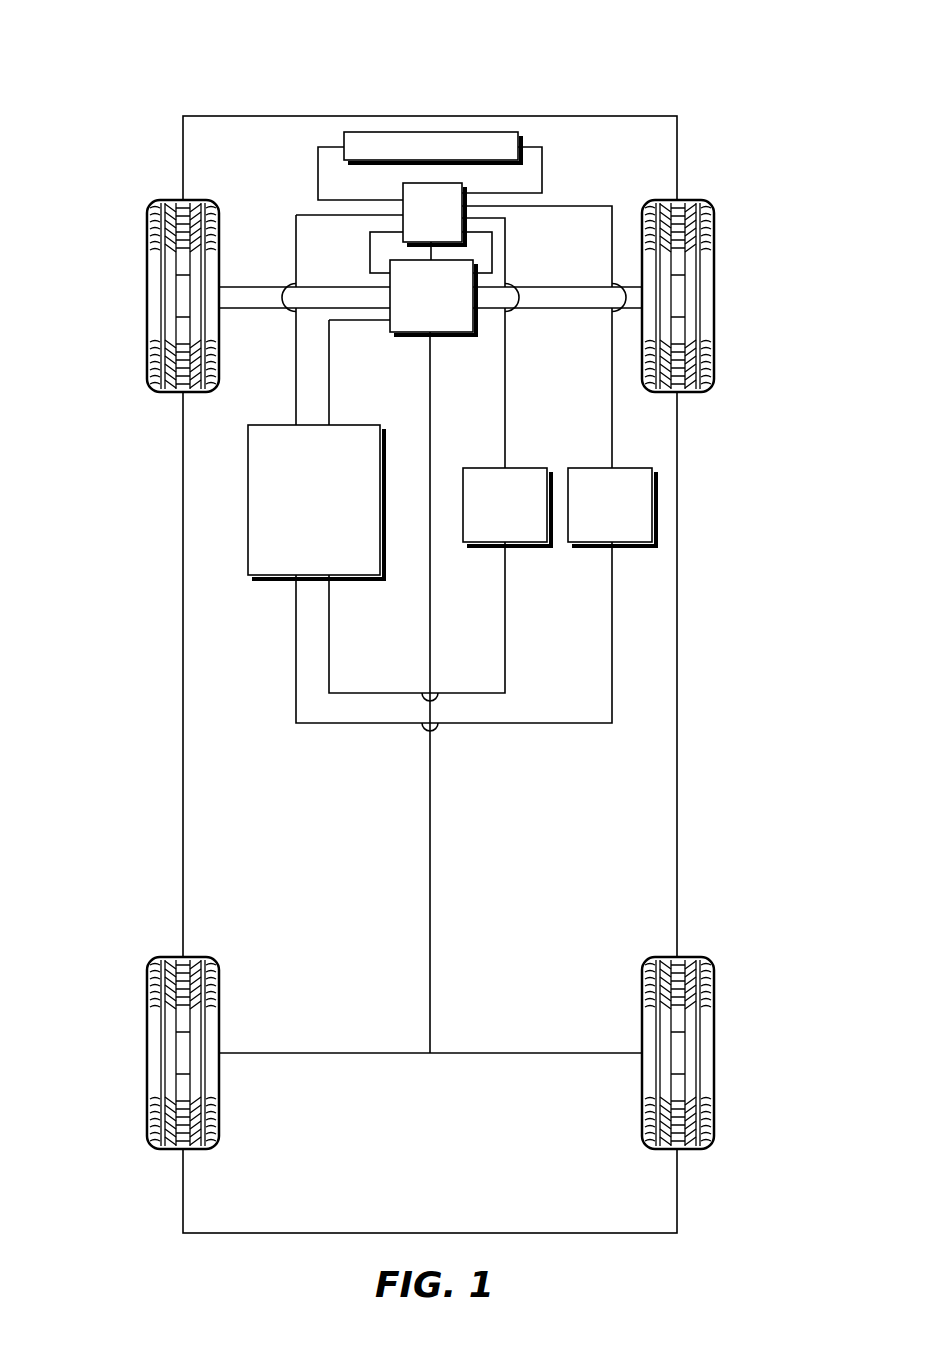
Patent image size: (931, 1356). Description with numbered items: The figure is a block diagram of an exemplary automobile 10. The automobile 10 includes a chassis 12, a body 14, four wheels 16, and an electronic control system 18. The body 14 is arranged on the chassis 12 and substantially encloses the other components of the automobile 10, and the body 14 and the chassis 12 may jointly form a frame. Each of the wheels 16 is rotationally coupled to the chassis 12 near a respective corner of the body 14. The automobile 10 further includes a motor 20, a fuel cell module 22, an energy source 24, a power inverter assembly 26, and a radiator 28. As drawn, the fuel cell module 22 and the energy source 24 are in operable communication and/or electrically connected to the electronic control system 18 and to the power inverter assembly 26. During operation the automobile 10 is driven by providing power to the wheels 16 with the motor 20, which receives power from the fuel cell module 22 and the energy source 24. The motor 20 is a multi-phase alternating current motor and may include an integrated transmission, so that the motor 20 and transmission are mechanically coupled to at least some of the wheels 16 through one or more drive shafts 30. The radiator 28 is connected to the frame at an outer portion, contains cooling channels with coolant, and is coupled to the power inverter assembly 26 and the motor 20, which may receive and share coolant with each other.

The automobile 10 is at (698, 40).
The chassis 12 is at (429, 925).
The body 14 is at (197, 500).
The wheels 16 is at (148, 262).
The electronic control system 18 is at (328, 514).
The motor 20 is at (446, 310).
The fuel cell module 22 is at (520, 517).
The energy source 24 is at (625, 517).
The power inverter assembly 26 is at (446, 227).
The radiator 28 is at (382, 132).
The drive shafts 30 is at (278, 283).